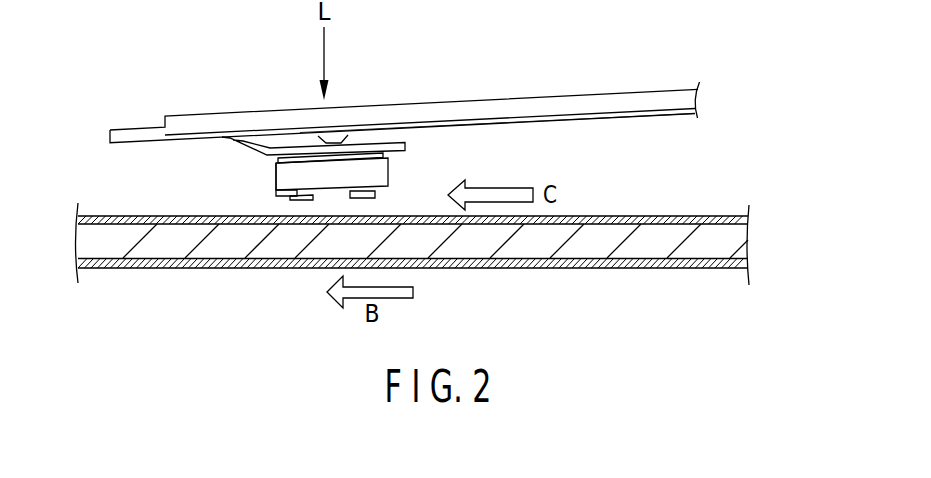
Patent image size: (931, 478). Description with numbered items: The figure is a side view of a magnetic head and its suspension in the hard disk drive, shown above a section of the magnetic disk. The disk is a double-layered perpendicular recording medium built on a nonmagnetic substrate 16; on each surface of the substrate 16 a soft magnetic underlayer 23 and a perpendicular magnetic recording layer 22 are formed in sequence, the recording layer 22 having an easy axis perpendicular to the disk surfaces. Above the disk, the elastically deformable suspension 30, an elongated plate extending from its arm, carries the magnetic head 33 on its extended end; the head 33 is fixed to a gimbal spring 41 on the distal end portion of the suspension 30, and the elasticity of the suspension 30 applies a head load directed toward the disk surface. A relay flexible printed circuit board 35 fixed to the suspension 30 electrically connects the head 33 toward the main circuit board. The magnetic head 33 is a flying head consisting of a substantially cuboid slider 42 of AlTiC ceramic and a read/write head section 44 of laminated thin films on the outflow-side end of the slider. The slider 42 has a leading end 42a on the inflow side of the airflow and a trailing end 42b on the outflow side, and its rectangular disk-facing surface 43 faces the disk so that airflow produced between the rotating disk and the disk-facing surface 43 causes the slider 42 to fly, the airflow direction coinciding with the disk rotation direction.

The substrate 16 is at (654, 252).
The perpendicular magnetic recording layer 22 is at (678, 216).
The soft magnetic underlayer 23 is at (743, 223).
The suspension 30 is at (577, 100).
The magnetic head 33 is at (408, 173).
The relay flexible printed circuit board 35 is at (644, 121).
The gimbal spring 41 is at (392, 142).
The slider 42 is at (307, 166).
The leading end 42a is at (389, 167).
The trailing end 42b is at (275, 187).
The disk-facing surface 43 is at (325, 213).
The read/write head section 44 is at (283, 177).